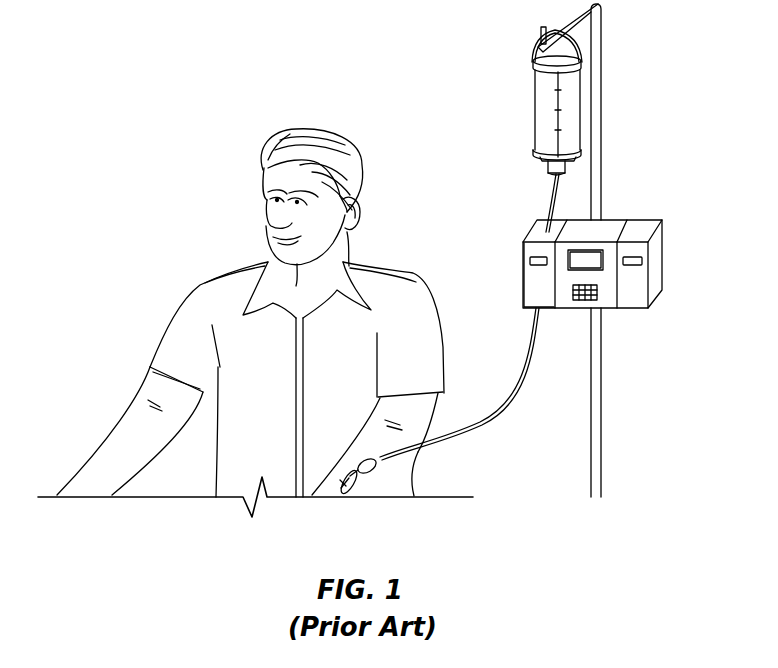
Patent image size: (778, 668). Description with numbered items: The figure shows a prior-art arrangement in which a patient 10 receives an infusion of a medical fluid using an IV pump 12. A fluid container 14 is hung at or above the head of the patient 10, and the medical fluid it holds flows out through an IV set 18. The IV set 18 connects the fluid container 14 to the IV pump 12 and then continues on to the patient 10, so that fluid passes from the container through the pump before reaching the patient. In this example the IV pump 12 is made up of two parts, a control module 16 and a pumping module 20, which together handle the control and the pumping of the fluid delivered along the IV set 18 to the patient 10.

The patient 10 is at (222, 118).
The IV pump 12 is at (662, 142).
The fluid container 14 is at (540, 115).
The control module 16 is at (602, 232).
The IV set 18 is at (542, 192).
The pumping module 20 is at (528, 288).